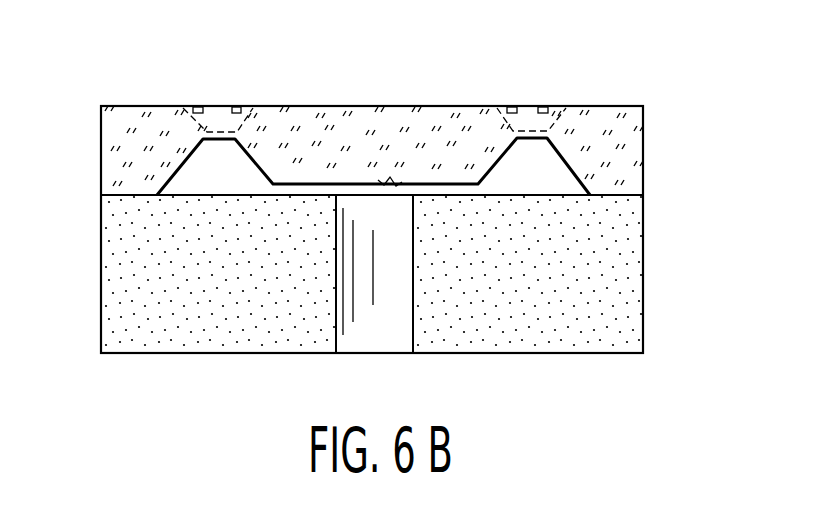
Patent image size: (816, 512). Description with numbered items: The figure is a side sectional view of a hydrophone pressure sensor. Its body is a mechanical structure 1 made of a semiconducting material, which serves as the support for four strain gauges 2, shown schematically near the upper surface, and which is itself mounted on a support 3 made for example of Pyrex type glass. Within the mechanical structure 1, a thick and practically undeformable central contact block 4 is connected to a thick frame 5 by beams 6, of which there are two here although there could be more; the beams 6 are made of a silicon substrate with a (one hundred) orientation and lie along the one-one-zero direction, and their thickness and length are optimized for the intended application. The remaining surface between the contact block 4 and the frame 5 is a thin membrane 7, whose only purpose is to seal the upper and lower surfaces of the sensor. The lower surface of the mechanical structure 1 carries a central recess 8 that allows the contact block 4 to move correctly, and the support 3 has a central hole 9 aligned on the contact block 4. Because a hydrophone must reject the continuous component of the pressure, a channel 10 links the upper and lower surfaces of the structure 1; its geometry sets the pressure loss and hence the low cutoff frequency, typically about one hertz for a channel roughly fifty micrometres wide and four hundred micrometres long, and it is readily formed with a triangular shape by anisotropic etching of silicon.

The mechanical structure 1 is at (616, 90).
The strain gauges 2 is at (197, 107).
The support 3 is at (628, 287).
The central contact block 4 is at (330, 157).
The frame 5 is at (637, 163).
The beams 6 is at (223, 107).
The membrane 7 is at (203, 133).
The central recess 8 is at (290, 197).
The central hole 9 is at (360, 340).
The channel 10 is at (392, 182).